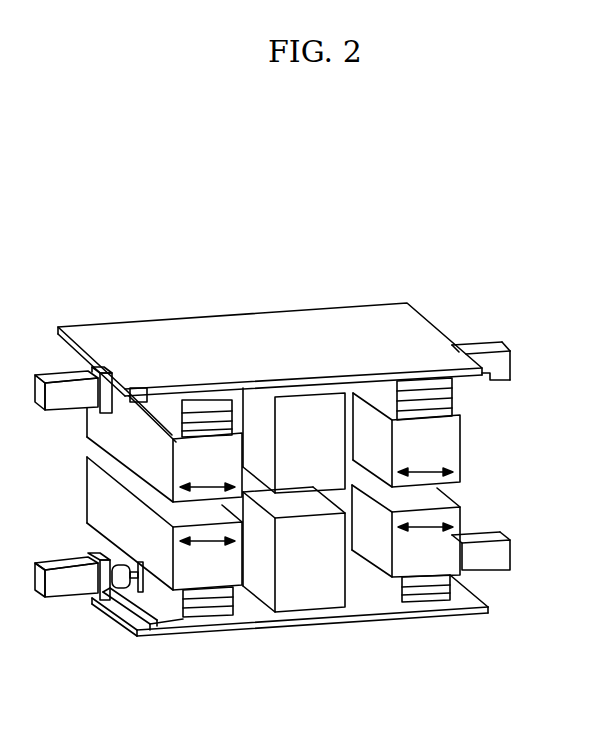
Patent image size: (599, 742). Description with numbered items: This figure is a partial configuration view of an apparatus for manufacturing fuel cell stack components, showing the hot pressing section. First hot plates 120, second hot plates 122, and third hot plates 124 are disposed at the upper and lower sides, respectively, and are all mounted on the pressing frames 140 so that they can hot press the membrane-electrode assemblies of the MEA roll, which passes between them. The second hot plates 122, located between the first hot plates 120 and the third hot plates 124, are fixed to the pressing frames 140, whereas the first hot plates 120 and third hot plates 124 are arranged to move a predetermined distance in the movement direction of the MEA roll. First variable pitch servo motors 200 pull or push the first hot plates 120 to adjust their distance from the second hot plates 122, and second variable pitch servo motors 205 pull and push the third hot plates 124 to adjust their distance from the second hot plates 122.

The first hot plates 120 is at (220, 457).
The second hot plates 122 is at (317, 455).
The third hot plates 124 is at (437, 445).
The pressing frames 140 is at (362, 612).
The first variable pitch servo motors 200 is at (63, 400).
The second variable pitch servo motors 205 is at (492, 372).